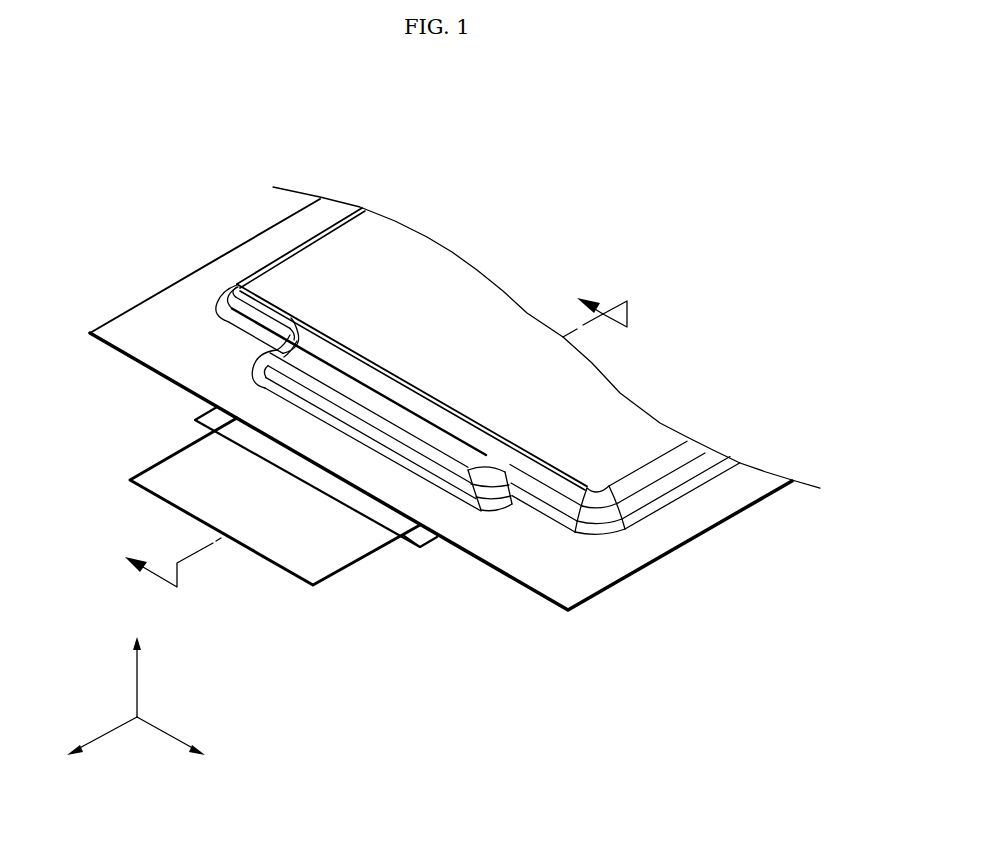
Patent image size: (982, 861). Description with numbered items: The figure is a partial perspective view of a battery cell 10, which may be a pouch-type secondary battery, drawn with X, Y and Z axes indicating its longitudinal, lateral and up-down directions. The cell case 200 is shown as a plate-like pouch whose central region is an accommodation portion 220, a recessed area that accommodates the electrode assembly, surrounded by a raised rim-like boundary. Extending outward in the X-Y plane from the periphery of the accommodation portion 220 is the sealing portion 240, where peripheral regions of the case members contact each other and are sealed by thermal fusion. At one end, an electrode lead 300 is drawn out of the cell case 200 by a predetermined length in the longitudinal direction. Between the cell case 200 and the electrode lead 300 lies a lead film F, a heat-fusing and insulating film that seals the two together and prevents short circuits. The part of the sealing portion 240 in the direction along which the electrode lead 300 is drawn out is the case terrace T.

The battery cell 10 is at (170, 204).
The cell case 200 is at (680, 559).
The accommodation portion 220 is at (617, 437).
The sealing portion 240 is at (248, 257).
The electrode lead 300 is at (175, 470).
The lead film F is at (420, 538).
The case terrace T is at (497, 542).